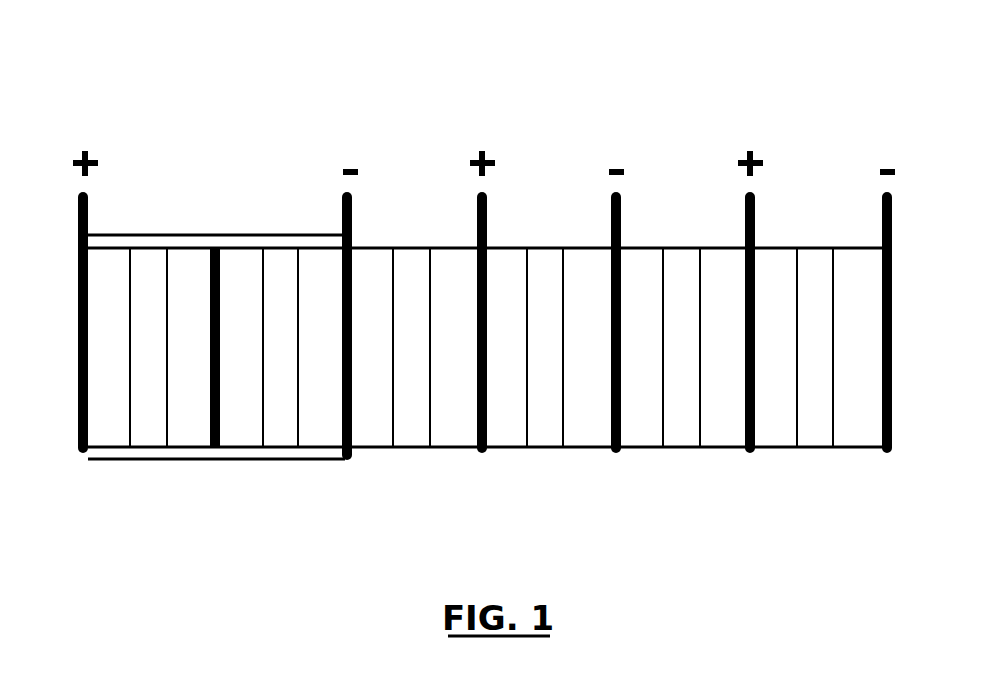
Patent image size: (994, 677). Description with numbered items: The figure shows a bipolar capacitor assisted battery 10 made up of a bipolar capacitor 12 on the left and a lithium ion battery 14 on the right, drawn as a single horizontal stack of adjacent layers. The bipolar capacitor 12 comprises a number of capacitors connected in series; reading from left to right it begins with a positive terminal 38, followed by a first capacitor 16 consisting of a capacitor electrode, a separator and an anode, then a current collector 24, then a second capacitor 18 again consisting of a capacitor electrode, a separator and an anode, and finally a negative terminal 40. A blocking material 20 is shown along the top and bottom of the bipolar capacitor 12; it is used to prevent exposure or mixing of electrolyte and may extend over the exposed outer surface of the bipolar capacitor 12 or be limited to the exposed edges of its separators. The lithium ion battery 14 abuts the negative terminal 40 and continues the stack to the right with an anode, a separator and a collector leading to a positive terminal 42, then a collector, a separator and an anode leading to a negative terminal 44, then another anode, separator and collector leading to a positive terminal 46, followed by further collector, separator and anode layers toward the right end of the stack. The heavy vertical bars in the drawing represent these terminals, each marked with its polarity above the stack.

The bipolar capacitor assisted battery 10 is at (287, 68).
The bipolar capacitor 12 is at (218, 146).
The lithium ion battery 14 is at (660, 141).
The first capacitor 16 is at (121, 492).
The second capacitor 18 is at (271, 497).
The blocking material 20 is at (165, 234).
The current collector 24 is at (215, 247).
The positive terminal 38 is at (82, 460).
The negative terminal 40 is at (346, 460).
The positive terminal 42 is at (481, 453).
The negative terminal 44 is at (615, 453).
The positive terminal 46 is at (750, 453).